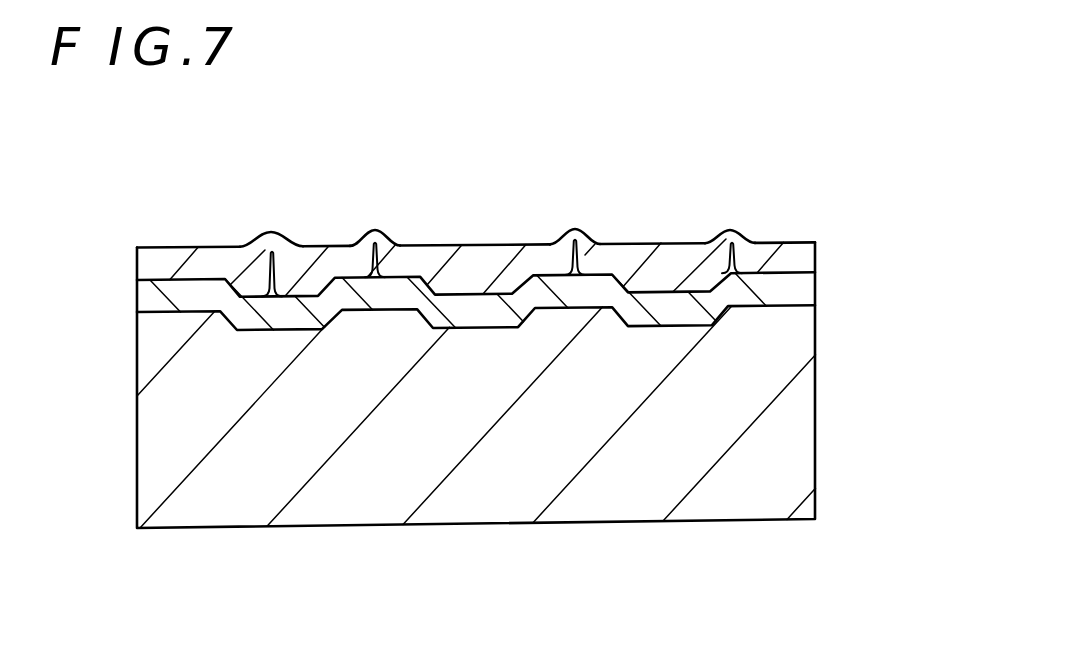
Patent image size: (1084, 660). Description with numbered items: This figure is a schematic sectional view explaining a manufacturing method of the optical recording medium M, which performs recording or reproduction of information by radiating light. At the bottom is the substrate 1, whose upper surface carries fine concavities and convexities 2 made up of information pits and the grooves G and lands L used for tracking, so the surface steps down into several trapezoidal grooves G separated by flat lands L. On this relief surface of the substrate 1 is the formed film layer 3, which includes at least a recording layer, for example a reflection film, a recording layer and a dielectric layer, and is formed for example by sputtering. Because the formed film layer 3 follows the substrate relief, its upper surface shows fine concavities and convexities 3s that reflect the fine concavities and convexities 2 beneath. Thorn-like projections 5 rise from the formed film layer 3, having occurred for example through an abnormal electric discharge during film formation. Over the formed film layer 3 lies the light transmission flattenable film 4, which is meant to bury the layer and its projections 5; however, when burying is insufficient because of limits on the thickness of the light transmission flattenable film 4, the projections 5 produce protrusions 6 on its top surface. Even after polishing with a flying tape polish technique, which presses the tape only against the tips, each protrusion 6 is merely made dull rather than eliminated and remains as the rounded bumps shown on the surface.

The substrate 1 is at (805, 435).
The fine concavities and convexities 2 is at (663, 325).
The formed film layer 3 is at (800, 293).
The fine concavities and convexities of the formed film layer 3s is at (697, 292).
The light transmission flattenable film 4 is at (805, 257).
The thorn-like projection 5 is at (265, 288).
The protrusion 6 is at (287, 243).
The land L is at (400, 305).
The groove G is at (480, 325).
The optical recording medium M is at (857, 568).